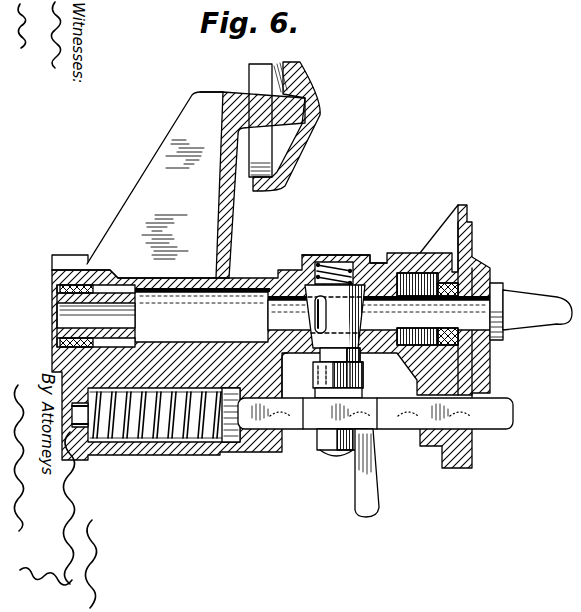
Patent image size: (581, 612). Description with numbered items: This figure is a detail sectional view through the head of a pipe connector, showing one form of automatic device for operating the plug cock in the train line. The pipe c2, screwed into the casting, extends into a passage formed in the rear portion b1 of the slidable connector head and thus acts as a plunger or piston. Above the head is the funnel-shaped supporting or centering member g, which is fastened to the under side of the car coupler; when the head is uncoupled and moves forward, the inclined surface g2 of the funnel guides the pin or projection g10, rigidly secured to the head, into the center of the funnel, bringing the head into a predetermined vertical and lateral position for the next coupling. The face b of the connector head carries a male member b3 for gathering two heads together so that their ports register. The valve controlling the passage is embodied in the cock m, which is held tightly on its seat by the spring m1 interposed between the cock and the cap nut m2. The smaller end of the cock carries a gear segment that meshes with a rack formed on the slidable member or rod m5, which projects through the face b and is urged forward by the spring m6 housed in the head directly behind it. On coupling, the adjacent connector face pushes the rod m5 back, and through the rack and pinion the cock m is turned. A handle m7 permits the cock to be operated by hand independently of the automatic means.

The face of the connector head b is at (474, 386).
The rear portion of the slidable connector head b1 is at (186, 286).
The male member b3 is at (531, 311).
The pipe c2 is at (80, 322).
The supporting or centering member (funnel) g is at (303, 145).
The inclined surface of the funnel-shaped member g2 is at (300, 102).
The pin or projection g10 is at (223, 110).
The cock m is at (335, 341).
The spring m1 is at (353, 270).
The cap nut m2 is at (330, 262).
The slidable member or rod m5 is at (512, 402).
The spring m6 is at (178, 442).
The handle m7 is at (370, 493).